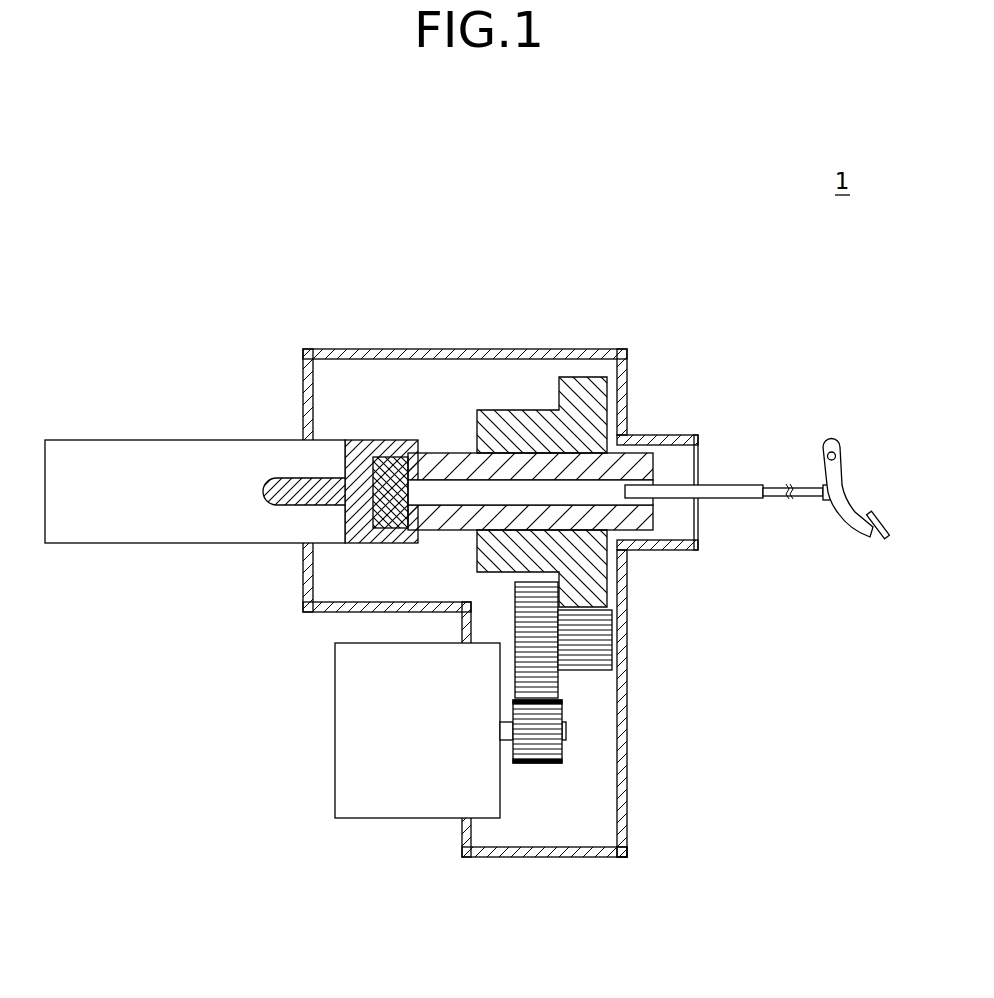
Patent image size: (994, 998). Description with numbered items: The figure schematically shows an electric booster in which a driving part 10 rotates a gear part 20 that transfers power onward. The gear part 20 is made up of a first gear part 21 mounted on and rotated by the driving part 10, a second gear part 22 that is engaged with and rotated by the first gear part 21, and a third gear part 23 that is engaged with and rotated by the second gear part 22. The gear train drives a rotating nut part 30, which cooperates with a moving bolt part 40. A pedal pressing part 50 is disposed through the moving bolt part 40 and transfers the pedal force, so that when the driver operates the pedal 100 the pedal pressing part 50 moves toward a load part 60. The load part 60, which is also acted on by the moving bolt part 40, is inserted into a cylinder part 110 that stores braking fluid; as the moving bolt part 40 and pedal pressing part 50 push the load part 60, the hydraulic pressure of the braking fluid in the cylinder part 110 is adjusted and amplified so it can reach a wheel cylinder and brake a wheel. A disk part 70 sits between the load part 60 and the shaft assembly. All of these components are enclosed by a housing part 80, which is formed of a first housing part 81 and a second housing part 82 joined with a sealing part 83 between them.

The driving part 10 is at (380, 800).
The gear part 20 is at (653, 666).
The first gear part 21 is at (550, 715).
The second gear part 22 is at (587, 635).
The third gear part 23 is at (587, 575).
The rotating nut part 30 is at (523, 420).
The moving bolt part 40 is at (443, 463).
The pedal pressing part 50 is at (742, 492).
The load part 60 is at (365, 530).
The disk part 70 is at (388, 470).
The housing part 80 is at (500, 667).
The first housing part 81 is at (557, 858).
The second housing part 82 is at (627, 803).
The sealing part 83 is at (616, 885).
The pedal 100 is at (845, 507).
The cylinder part 110 is at (103, 533).